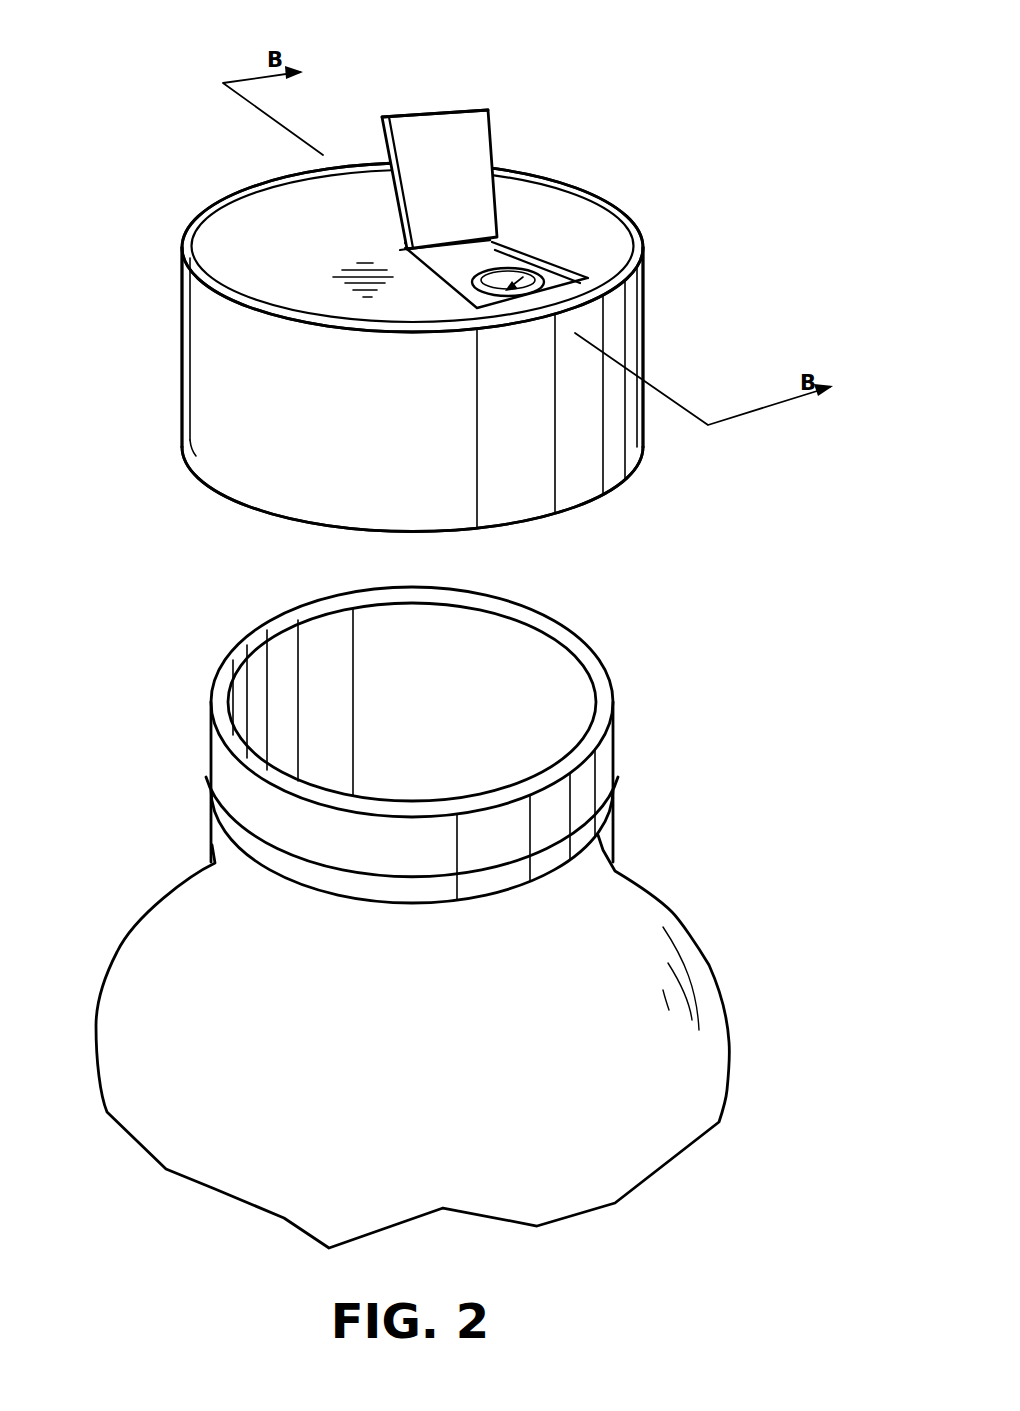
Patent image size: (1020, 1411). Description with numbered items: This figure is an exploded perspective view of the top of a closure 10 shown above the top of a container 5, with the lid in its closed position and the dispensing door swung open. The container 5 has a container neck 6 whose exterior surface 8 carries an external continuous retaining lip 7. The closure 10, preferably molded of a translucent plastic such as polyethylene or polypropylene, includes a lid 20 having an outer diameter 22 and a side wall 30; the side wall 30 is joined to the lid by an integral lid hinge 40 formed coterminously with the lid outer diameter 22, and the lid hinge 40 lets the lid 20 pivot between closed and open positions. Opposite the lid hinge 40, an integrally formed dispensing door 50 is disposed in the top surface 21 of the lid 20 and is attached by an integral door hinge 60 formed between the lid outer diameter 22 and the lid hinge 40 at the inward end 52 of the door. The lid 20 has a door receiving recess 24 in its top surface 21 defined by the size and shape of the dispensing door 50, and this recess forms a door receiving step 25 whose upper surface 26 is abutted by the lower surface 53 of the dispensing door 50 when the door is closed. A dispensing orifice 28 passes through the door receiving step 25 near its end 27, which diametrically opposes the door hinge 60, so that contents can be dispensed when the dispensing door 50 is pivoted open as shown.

The container 5 is at (755, 997).
The container neck 6 is at (602, 757).
The external continuous retaining lip 7 is at (606, 830).
The exterior surface 8 is at (378, 866).
The closure 10 is at (546, 128).
The lid 20 is at (253, 228).
The top surface 21 is at (290, 271).
The outer diameter 22 is at (584, 195).
The door receiving recess 24 is at (520, 233).
The door receiving step 25 is at (520, 236).
The upper surface 26 is at (443, 276).
The end 27 is at (590, 300).
The dispensing orifice 28 is at (565, 256).
The side wall 30 is at (617, 353).
The lid hinge 40 is at (350, 173).
The dispensing door 50 is at (421, 128).
The inward end 52 is at (487, 258).
The lower surface 53 is at (431, 171).
The door hinge 60 is at (400, 250).